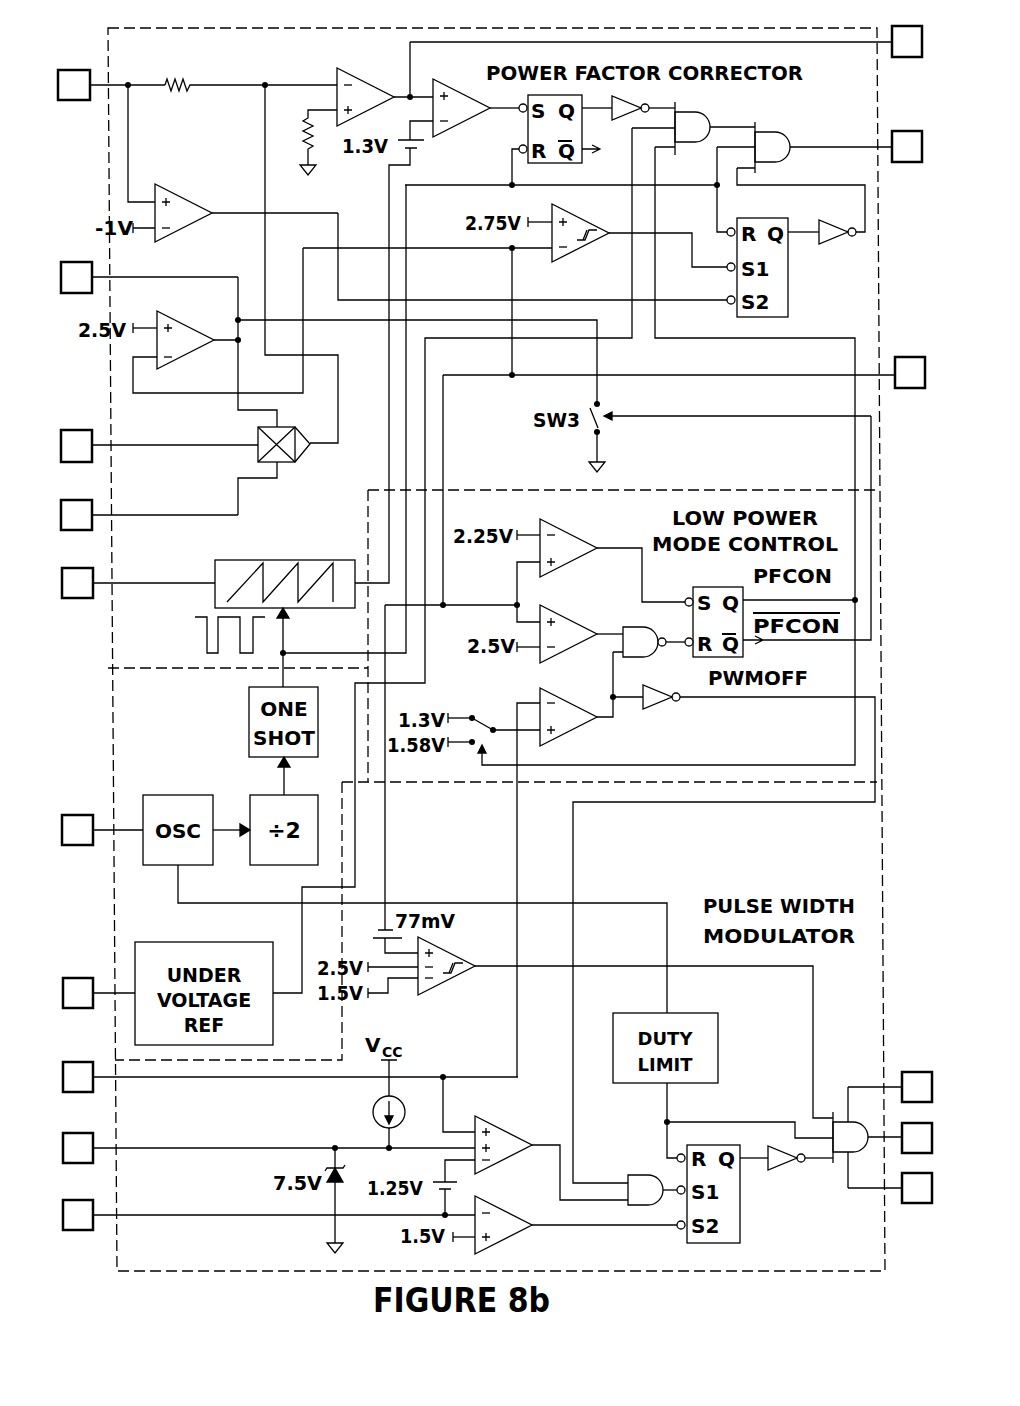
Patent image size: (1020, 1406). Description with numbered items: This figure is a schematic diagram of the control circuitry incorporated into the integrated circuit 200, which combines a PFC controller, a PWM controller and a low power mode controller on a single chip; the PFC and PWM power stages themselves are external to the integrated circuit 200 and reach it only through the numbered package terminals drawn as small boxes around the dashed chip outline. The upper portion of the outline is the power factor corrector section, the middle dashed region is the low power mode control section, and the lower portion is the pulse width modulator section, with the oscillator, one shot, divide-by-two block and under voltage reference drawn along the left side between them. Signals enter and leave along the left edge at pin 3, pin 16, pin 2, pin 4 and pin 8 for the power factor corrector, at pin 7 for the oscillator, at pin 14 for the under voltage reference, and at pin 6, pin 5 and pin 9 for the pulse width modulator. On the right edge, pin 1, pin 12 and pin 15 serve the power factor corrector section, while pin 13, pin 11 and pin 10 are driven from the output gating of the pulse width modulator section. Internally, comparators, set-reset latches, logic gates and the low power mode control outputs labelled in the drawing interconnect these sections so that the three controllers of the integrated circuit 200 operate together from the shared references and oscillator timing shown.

The integrated circuit 200 is at (485, 22).
The pin 1 is at (666, 41).
The pin 2 is at (159, 446).
The pin 3 is at (111, 85).
The pin 4 is at (149, 515).
The pin 5 is at (269, 1148).
The pin 6 is at (290, 1077).
The pin 7 is at (102, 830).
The pin 8 is at (138, 583).
The pin 9 is at (269, 1215).
The pin 10 is at (890, 1188).
The pin 11 is at (900, 1138).
The pin 12 is at (856, 146).
The pin 13 is at (890, 1087).
The pin 14 is at (99, 993).
The pin 15 is at (684, 372).
The pin 16 is at (149, 277).